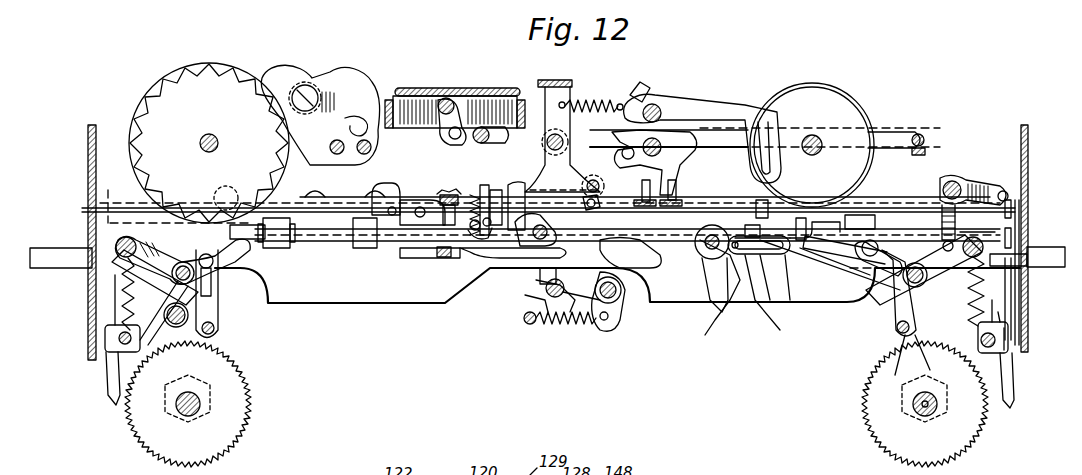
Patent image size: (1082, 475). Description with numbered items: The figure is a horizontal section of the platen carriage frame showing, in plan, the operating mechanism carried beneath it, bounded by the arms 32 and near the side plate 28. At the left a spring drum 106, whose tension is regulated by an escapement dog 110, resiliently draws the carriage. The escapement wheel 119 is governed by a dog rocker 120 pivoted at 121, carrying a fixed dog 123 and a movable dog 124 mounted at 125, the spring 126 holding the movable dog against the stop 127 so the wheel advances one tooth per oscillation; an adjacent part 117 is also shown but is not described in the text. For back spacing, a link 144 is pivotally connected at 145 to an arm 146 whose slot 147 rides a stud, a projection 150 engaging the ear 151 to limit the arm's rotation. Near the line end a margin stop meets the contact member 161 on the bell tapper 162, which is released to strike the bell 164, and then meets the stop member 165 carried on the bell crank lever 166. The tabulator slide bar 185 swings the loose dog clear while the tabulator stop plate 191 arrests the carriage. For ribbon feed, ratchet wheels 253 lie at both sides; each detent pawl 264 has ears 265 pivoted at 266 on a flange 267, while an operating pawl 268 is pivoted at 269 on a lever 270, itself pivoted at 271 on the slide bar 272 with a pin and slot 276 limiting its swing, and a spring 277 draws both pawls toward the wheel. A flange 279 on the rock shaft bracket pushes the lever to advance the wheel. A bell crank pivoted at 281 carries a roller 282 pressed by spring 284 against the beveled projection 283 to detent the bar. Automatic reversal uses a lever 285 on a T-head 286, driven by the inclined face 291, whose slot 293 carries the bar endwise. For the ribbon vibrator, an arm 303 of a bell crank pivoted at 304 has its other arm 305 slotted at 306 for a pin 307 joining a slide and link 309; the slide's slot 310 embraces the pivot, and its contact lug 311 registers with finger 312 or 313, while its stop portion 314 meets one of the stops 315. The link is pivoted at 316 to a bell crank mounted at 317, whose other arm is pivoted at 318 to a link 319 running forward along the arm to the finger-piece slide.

The side plate 28 is at (560, 324).
The arm 32 is at (88, 165).
The spring drum 106 is at (212, 85).
The escapement dog 110 is at (283, 80).
The link 117 is at (580, 215).
The escapement wheel 119 is at (575, 182).
The dog rocker 120 is at (440, 196).
The pivot 121 is at (498, 172).
The fixed dog 123 is at (360, 227).
The movable dog 124 is at (495, 191).
The mounting of movable dog 125 is at (482, 260).
The spring 126 is at (470, 250).
The stop 127 is at (540, 242).
The link 144 is at (313, 203).
The pivotal connection 145 is at (582, 324).
The arm 146 is at (598, 202).
The slot 147 is at (575, 165).
The projection 150 is at (548, 257).
The ear 151 is at (645, 285).
The contact member 161 is at (640, 93).
The bell tapper 162 is at (700, 110).
The bell 164 is at (858, 103).
The stop member 165 is at (548, 82).
The bell crank lever 166 is at (545, 100).
The slide bar 185 is at (900, 135).
The tabulator stop plate 191 is at (455, 96).
The ratchet wheel 253 is at (236, 402).
The detent pawl 264 is at (110, 392).
The ear 265 is at (1000, 322).
The pivot 266 is at (120, 340).
The flange 267 is at (1012, 336).
The operating pawl 268 is at (105, 378).
The pivot 269 is at (972, 245).
The lever 270 is at (920, 282).
The pivot 271 is at (908, 292).
The slide bar 272 is at (782, 300).
The pin and slot 276 is at (816, 304).
The spring 277 is at (992, 281).
The flange 279 is at (238, 230).
The pivot 281 is at (612, 305).
The roller 282 is at (548, 326).
The beveled projection 283 is at (544, 282).
The spring 284 is at (575, 324).
The lever 285 is at (214, 310).
The T-head 286 is at (895, 348).
The inclined face 291 is at (262, 262).
The slot 293 is at (872, 302).
The arm 303 is at (760, 305).
The pivot 304 is at (714, 240).
The arm 305 is at (792, 302).
The slot 306 is at (751, 254).
The pin 307 is at (750, 305).
The link 309 is at (800, 254).
The slot 310 is at (703, 232).
The contact lug 311 is at (778, 215).
The finger 312 is at (772, 205).
The finger 313 is at (800, 235).
The stop portion 314 is at (690, 277).
The stop 315 is at (672, 170).
The pivotal connection 316 is at (985, 230).
The pivot 317 is at (956, 192).
The pivot 318 is at (1021, 183).
The link 319 is at (1023, 236).